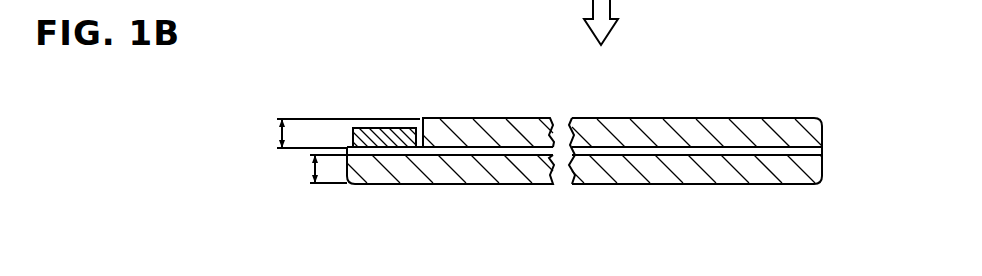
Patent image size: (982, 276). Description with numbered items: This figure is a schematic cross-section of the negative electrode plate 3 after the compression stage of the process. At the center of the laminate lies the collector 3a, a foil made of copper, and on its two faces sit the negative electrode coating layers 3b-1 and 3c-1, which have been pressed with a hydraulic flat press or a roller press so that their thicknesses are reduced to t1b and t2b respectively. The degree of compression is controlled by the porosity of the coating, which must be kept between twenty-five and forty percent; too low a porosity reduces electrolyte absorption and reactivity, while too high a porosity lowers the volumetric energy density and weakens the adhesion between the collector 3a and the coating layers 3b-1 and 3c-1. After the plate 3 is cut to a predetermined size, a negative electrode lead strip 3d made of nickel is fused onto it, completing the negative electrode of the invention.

The negative electrode plate 3 is at (716, 110).
The collector 3a is at (822, 151).
The negative electrode coating layer 3b-1 is at (822, 128).
The negative electrode coating layer 3c-1 is at (822, 172).
The negative electrode lead strip 3d is at (387, 127).
The thickness of negative electrode coating layer after compression t1b is at (331, 134).
The thickness of negative electrode coating layer after compression t2b is at (309, 169).